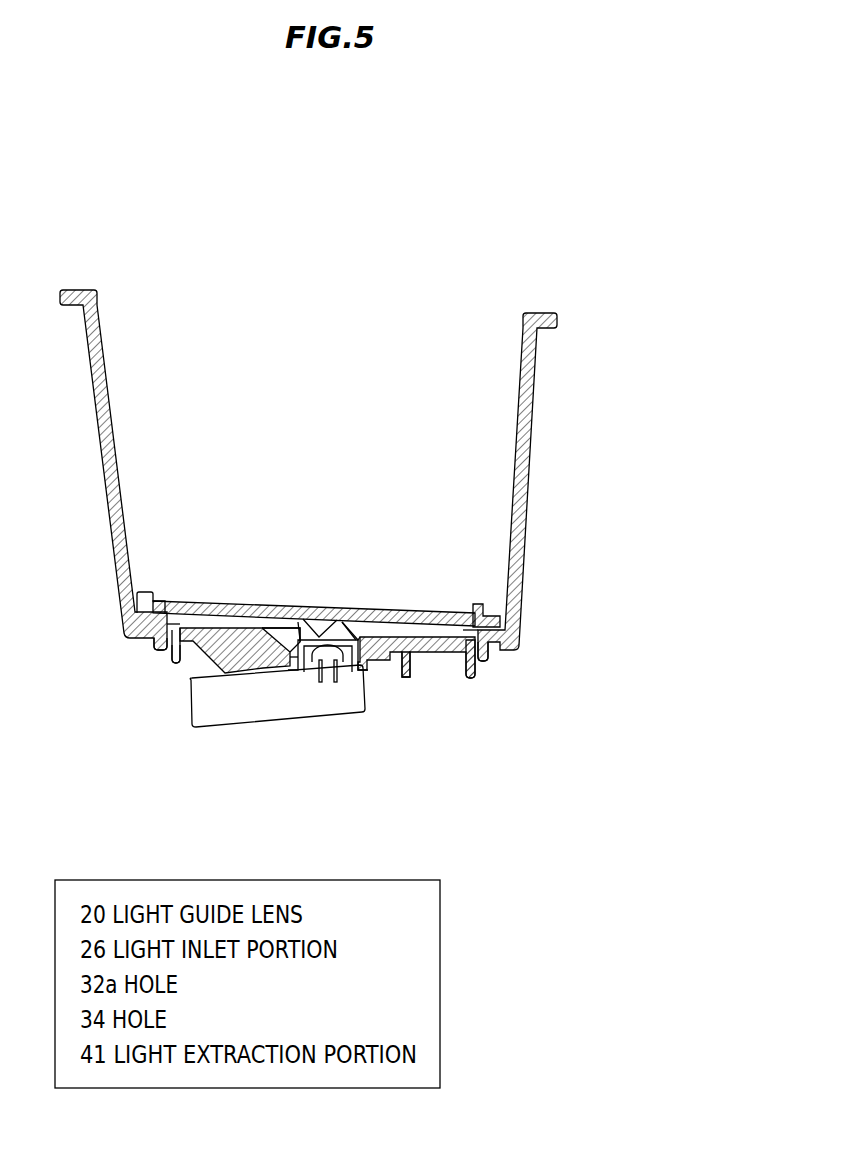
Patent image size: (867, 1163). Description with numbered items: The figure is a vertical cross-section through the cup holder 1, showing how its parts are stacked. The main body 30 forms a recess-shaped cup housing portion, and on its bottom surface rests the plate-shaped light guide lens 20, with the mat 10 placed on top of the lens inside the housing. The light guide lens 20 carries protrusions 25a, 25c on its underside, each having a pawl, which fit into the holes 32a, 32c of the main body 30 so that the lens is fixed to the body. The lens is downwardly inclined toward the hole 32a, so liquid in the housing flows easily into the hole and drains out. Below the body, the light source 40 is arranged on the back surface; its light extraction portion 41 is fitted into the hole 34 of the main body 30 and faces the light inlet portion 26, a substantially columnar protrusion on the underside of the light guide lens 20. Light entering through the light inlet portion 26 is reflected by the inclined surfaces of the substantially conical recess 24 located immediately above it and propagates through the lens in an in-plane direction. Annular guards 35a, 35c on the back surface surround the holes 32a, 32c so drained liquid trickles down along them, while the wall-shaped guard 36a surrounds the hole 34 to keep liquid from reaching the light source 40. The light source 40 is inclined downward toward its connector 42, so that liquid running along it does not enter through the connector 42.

The cup holder 1 is at (456, 249).
The main body 30 is at (547, 309).
The mat 10 is at (227, 597).
The light guide lens 20 is at (148, 584).
The substantially conical recess 24 is at (318, 631).
The light inlet portion 26 is at (337, 640).
The light extraction portion 41 is at (356, 633).
The hole 34 is at (287, 628).
The hole 32a is at (462, 638).
The hole 32c is at (178, 622).
The protrusion 25a is at (474, 678).
The protrusion 25c is at (168, 657).
The guard 35a is at (484, 657).
The guard 35c is at (157, 640).
The guard 36a is at (410, 678).
The light source 40 is at (334, 727).
The connector 42 is at (212, 715).